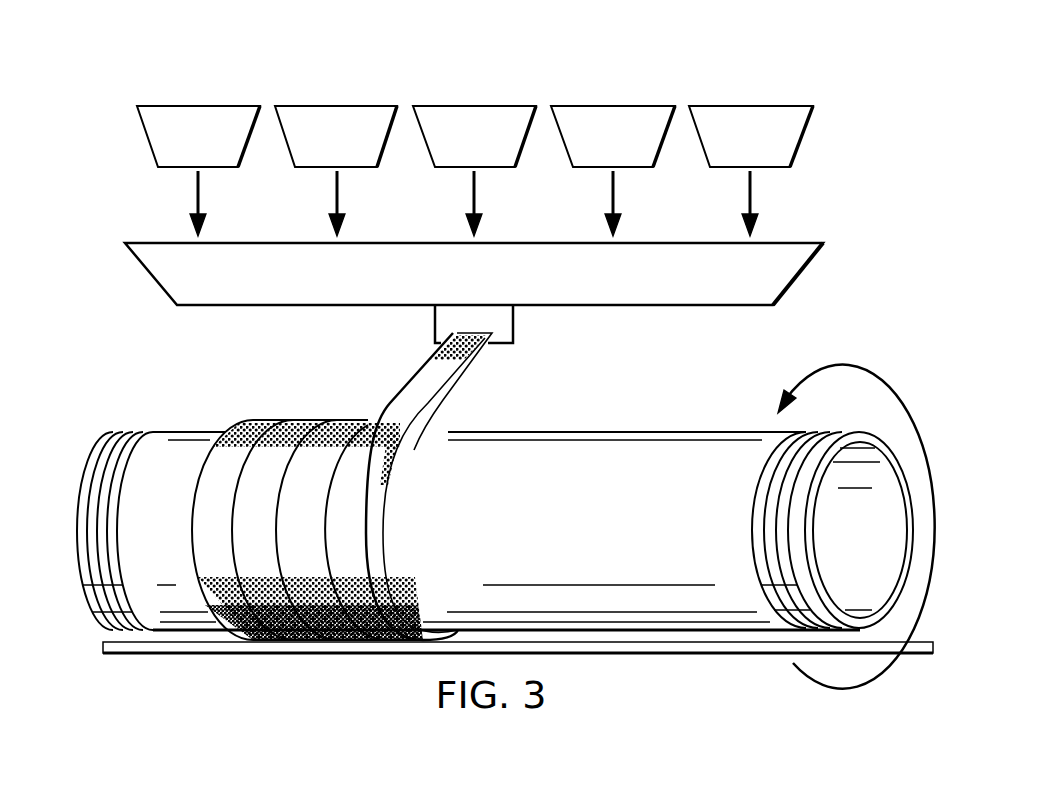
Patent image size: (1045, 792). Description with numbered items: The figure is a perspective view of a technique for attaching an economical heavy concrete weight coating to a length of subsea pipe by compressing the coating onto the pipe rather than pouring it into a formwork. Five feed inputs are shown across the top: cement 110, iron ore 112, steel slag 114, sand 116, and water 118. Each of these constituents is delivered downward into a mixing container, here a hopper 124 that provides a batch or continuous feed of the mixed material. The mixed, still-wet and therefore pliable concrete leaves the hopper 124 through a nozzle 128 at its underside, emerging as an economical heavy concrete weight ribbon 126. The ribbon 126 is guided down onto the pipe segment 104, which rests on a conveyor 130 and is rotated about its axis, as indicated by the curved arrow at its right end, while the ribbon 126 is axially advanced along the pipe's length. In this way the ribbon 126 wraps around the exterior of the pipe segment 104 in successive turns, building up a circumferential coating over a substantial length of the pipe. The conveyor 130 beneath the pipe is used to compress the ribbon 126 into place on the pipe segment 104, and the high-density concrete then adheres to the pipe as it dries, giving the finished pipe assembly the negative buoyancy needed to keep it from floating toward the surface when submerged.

The pipe segment 104 is at (280, 402).
The cement 110 is at (192, 104).
The iron ore 112 is at (332, 104).
The steel slag 114 is at (469, 104).
The sand 116 is at (618, 104).
The water 118 is at (757, 104).
The hopper 124 is at (798, 270).
The economical heavy concrete weight ribbon 126 is at (410, 395).
The nozzle 128 is at (515, 325).
The conveyor 130 is at (103, 646).